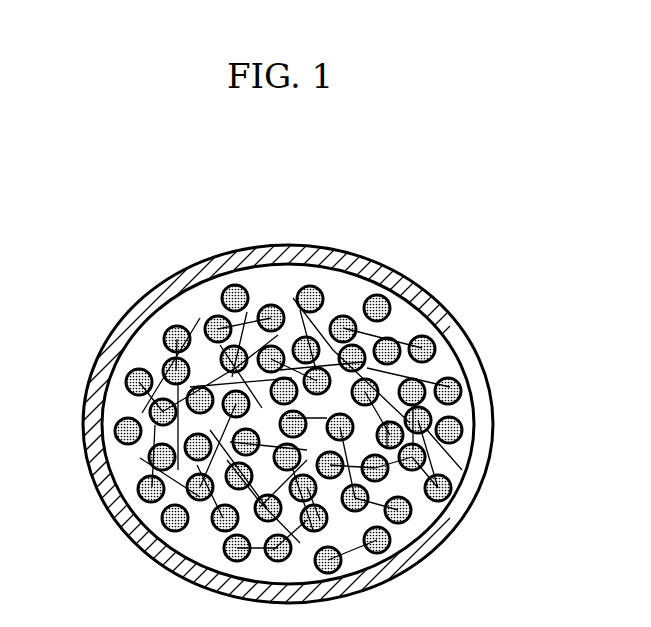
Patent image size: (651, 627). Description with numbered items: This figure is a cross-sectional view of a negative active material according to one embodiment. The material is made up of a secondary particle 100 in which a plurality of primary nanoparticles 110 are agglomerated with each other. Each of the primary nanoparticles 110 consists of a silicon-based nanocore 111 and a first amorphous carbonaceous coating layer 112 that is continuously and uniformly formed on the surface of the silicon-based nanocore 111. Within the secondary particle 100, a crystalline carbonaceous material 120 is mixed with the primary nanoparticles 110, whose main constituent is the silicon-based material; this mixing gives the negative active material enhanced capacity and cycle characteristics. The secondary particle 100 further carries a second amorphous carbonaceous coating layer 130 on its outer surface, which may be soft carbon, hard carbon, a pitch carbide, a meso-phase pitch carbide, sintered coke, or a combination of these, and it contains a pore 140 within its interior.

The secondary particle 100 is at (297, 313).
The primary nanoparticles 110 is at (321, 313).
The silicon-based nanocore 111 is at (415, 291).
The first amorphous carbonaceous coating layer 112 is at (400, 303).
The crystalline carbonaceous material 120 is at (462, 470).
The second amorphous carbonaceous coating layer 130 is at (470, 502).
The pore 140 is at (340, 298).